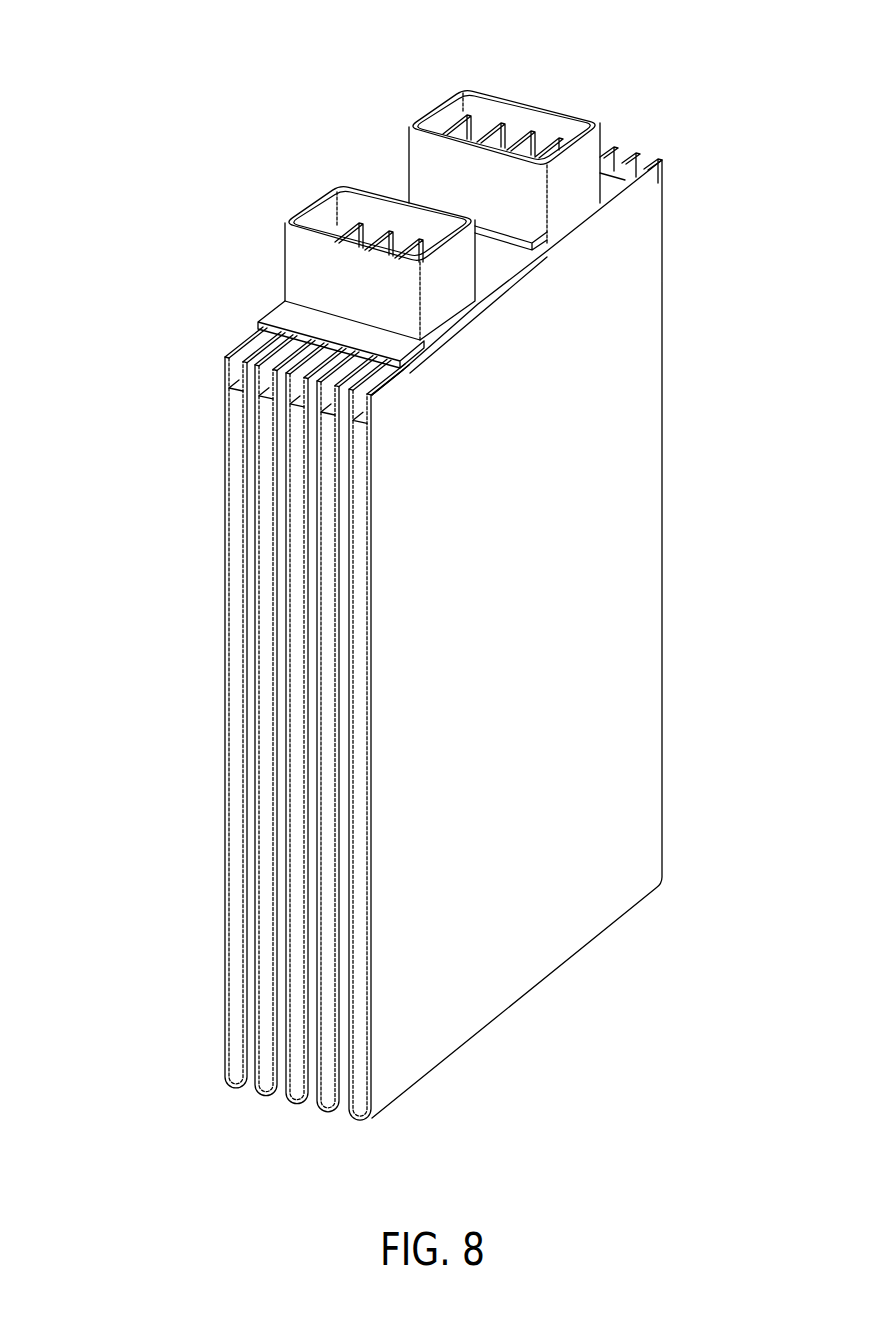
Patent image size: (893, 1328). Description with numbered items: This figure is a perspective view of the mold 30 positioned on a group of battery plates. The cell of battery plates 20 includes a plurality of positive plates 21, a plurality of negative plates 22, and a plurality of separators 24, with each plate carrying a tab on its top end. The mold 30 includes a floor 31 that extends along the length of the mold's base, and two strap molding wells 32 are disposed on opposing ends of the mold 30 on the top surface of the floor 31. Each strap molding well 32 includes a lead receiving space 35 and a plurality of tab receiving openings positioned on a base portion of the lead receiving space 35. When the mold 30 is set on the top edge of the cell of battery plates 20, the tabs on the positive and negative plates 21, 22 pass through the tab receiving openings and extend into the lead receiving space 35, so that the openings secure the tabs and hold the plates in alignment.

The cell of battery plates 20 is at (329, 723).
The positive plate 21 is at (362, 808).
The negative plate 22 is at (338, 1017).
The separator 24 is at (373, 397).
The mold 30 is at (206, 181).
The floor 31 is at (410, 353).
The strap molding well 32 is at (301, 224).
The lead receiving space 35 is at (328, 223).